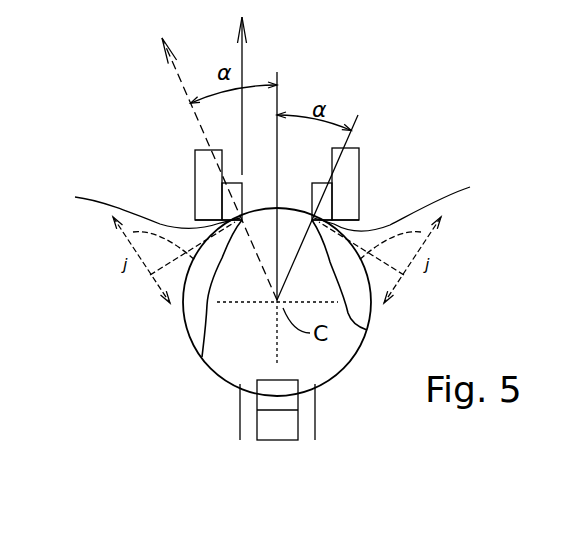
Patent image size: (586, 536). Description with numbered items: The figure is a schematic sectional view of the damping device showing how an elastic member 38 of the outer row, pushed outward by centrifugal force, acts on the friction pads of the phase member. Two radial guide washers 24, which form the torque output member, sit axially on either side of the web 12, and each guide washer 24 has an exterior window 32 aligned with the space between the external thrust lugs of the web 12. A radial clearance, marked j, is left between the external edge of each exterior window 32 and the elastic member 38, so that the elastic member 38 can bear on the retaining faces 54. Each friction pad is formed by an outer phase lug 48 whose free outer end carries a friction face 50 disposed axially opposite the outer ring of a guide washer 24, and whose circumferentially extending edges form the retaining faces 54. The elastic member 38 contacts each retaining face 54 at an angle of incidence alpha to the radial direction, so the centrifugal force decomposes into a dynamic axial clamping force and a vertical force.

The web 12 is at (280, 426).
The guide washer 24 is at (195, 178).
The exterior window 32 is at (273, 204).
The elastic member 38 is at (184, 320).
The outer phase lug 48 is at (244, 193).
The friction face 50 is at (215, 210).
The retaining face 54 is at (202, 357).